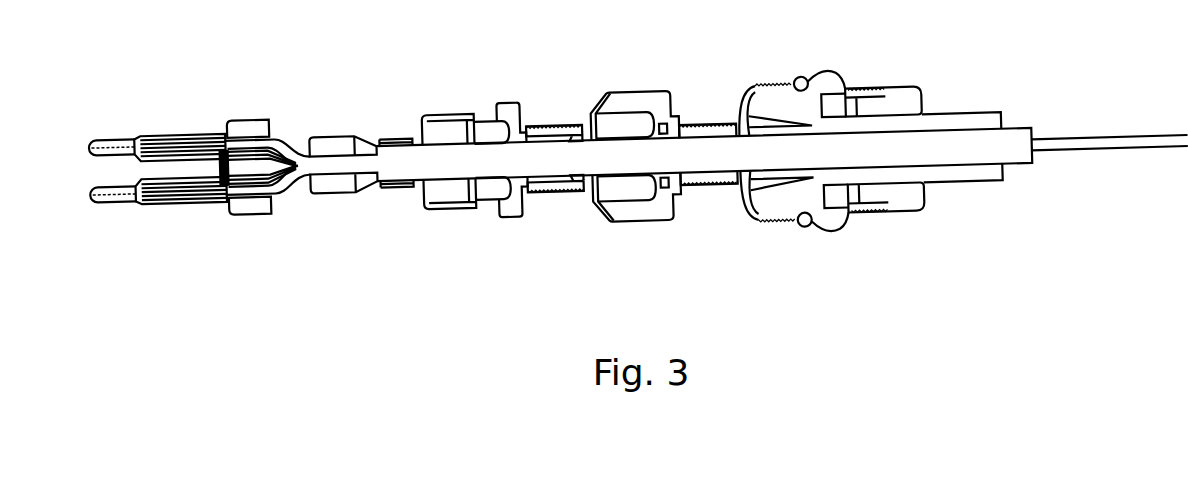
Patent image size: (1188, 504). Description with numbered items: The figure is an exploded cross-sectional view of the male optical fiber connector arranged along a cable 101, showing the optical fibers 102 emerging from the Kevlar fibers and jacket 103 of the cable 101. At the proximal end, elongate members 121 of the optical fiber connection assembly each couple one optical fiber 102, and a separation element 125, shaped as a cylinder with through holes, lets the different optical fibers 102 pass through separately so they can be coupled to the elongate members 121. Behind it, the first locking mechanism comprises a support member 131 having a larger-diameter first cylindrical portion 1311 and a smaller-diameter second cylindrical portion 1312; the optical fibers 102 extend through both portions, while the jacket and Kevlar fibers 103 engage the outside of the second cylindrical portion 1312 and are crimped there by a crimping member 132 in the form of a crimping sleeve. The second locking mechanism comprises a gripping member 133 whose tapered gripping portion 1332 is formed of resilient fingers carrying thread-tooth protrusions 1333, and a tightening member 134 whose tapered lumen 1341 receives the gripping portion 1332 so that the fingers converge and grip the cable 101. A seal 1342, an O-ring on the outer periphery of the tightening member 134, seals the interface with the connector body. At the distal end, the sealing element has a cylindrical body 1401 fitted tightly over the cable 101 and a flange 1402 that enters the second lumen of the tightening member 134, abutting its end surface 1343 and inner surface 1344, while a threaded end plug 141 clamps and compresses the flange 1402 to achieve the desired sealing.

The cable 101 is at (1010, 147).
The optical fibers 102 is at (280, 135).
The Kevlar fibers and jacket 103 is at (337, 133).
The elongate members 121 is at (156, 137).
The separation element 125 is at (245, 128).
The support member 131 is at (447, 110).
The first cylindrical portion 1311 is at (452, 203).
The crimping member 132 is at (552, 123).
The second cylindrical portion 1312 is at (540, 193).
The gripping member 133 is at (630, 103).
The gripping portion 1332 is at (697, 118).
The protrusions 1333 is at (698, 182).
The tightening member 134 is at (820, 75).
The lumen 1341 is at (767, 178).
The seal 1342 is at (798, 229).
The end surface 1343 is at (848, 95).
The inner surface 1344 is at (825, 113).
The cylindrical body 1401 is at (955, 120).
The flange 1402 is at (830, 188).
The end plug 141 is at (893, 192).